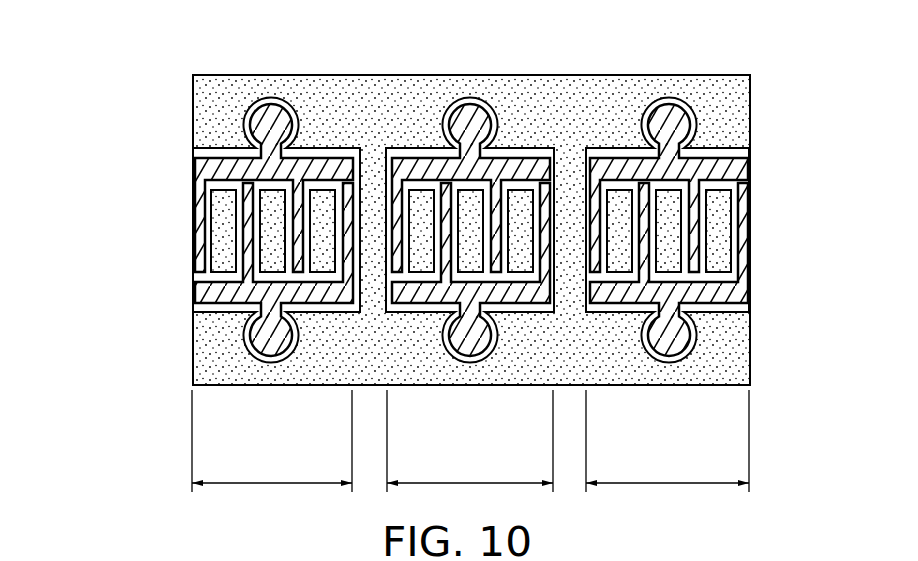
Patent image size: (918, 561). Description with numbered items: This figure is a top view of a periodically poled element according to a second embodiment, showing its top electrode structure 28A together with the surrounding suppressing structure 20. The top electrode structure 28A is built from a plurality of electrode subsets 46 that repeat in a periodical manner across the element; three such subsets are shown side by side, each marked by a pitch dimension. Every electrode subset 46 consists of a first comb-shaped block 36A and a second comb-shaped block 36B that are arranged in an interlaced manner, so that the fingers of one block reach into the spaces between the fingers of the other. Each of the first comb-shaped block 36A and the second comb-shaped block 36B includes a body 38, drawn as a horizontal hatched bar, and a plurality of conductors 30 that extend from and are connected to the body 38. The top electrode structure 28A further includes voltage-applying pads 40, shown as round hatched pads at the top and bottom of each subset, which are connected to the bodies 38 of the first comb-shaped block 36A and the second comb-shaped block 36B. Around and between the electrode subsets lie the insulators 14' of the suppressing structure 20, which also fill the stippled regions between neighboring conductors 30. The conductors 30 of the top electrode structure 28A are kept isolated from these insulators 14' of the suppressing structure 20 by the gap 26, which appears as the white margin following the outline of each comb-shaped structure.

The insulators 14' is at (493, 230).
The suppressing structure 20 is at (426, 257).
The gap 26 is at (728, 155).
The top electrode structure 28A is at (380, 271).
The conductors 30 is at (198, 208).
The first comb-shaped block 36A is at (138, 157).
The second comb-shaped block 36B is at (412, 269).
The body 38 is at (197, 165).
The voltage-applying pads 40 is at (277, 122).
The electrode subsets 46 is at (470, 441).